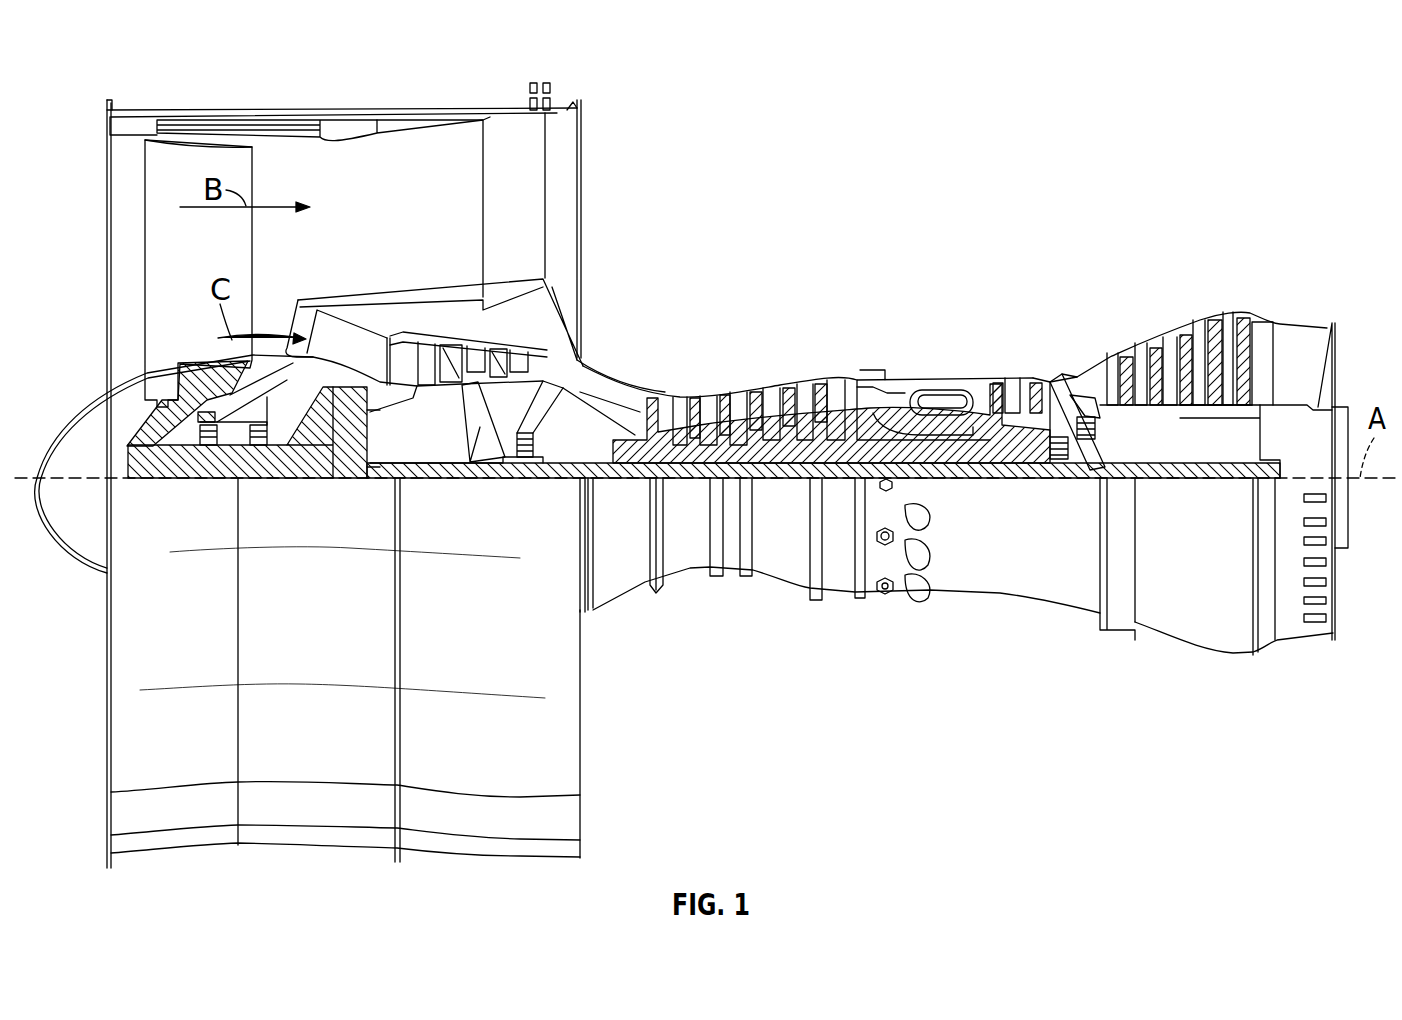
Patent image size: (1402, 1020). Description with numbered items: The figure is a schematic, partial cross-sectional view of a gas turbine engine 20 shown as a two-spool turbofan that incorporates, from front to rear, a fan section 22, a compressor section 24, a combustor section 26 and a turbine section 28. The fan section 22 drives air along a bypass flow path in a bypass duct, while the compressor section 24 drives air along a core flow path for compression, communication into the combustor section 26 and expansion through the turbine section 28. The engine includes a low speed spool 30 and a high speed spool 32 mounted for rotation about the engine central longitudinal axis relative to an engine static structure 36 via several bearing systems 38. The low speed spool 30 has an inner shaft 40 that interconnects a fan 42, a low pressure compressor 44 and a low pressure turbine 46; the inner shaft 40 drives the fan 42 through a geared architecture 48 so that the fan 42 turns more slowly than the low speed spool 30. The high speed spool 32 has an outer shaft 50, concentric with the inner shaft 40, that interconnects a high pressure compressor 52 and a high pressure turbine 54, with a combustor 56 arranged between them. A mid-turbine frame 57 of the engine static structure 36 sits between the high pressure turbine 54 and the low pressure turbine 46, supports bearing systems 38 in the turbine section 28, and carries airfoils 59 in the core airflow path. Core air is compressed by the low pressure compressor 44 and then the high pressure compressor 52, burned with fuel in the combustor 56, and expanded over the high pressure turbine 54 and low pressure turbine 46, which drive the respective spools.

The gas turbine engine 20 is at (1152, 148).
The fan section 22 is at (263, 110).
The compressor section 24 is at (628, 368).
The combustor section 26 is at (895, 339).
The turbine section 28 is at (1083, 318).
The low speed spool 30 is at (801, 484).
The high speed spool 32 is at (822, 427).
The engine static structure 36 is at (841, 590).
The bearing systems 38 is at (526, 440).
The inner shaft 40 is at (598, 482).
The fan 42 is at (222, 251).
The low pressure compressor 44 is at (470, 353).
The low pressure turbine 46 is at (1183, 338).
The geared architecture 48 is at (350, 447).
The outer shaft 50 is at (964, 453).
The high pressure compressor 52 is at (758, 400).
The high pressure turbine 54 is at (1020, 375).
The combustor 56 is at (950, 397).
The mid-turbine frame 57 is at (1073, 367).
The airfoils 59 is at (1073, 402).